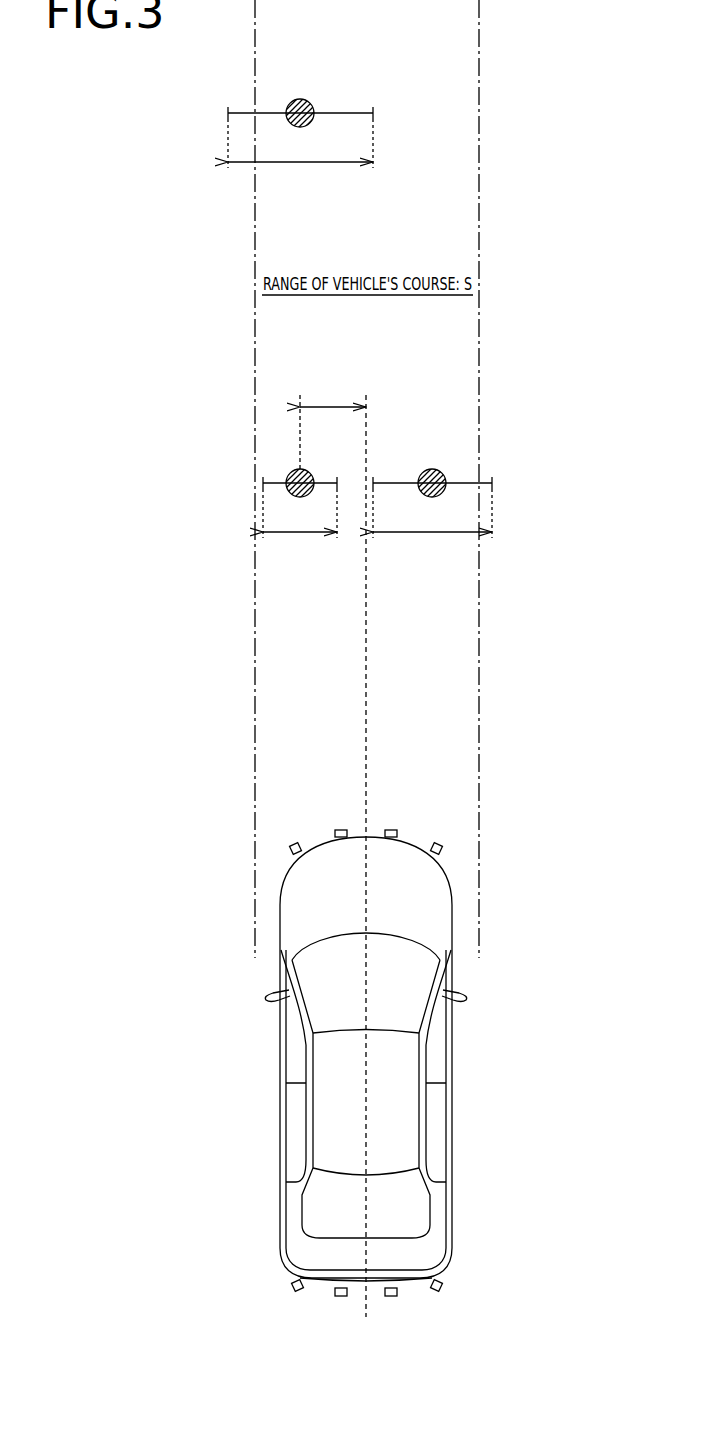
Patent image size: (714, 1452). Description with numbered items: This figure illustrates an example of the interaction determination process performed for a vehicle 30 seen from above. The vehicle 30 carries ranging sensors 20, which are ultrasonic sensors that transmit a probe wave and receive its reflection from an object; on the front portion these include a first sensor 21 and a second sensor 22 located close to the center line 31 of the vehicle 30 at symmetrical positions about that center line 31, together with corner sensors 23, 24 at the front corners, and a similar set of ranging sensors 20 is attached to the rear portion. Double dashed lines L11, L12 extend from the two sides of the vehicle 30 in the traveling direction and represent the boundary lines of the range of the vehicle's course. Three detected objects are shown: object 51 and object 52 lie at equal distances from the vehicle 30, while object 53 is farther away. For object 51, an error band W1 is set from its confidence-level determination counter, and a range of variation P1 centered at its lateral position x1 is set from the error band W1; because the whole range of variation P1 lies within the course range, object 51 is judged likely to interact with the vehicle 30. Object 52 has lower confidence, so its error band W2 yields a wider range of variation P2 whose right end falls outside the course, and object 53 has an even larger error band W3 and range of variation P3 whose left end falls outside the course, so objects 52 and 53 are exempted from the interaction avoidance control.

The ranging sensor 20 is at (365, 1039).
The first sensor 21 is at (396, 833).
The second sensor 22 is at (336, 833).
The corner sensor 23 is at (442, 848).
The corner sensor 24 is at (290, 848).
The vehicle 30 is at (453, 1113).
The center line 31 is at (367, 873).
The object 51 is at (294, 471).
The object 52 is at (433, 469).
The object 53 is at (300, 99).
The double dashed line L11 is at (479, 326).
The double dashed line L12 is at (255, 326).
The range of variation P1 is at (325, 483).
The range of variation P2 is at (391, 483).
The range of variation P3 is at (343, 113).
The error band W1 is at (300, 526).
The error band W2 is at (432, 526).
The error band W3 is at (300, 155).
The lateral position x1 is at (333, 422).